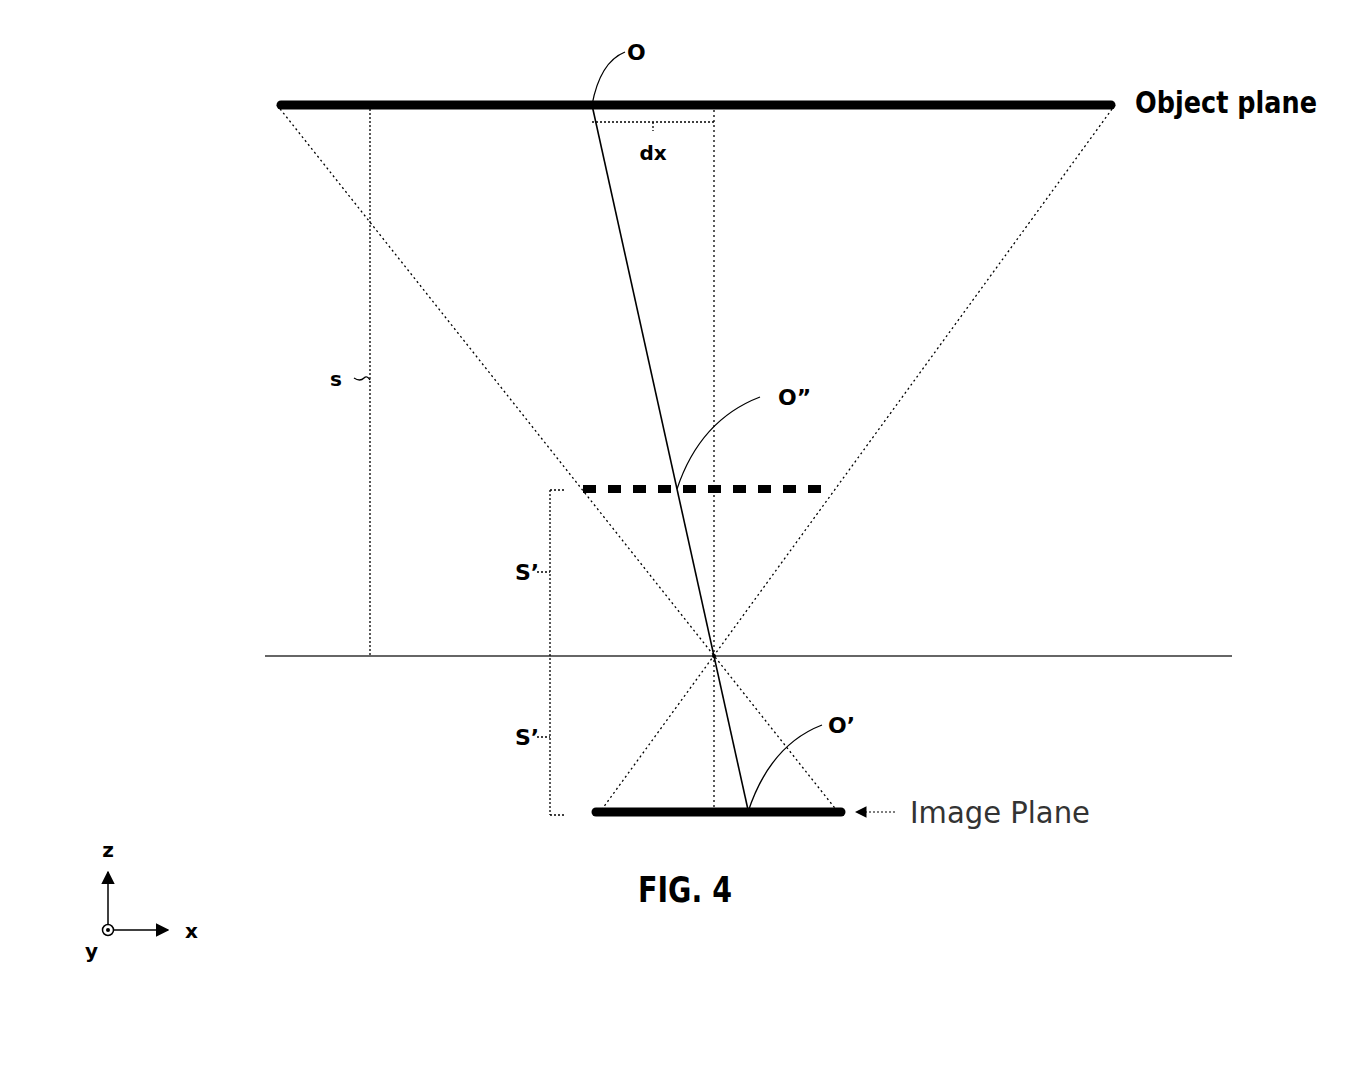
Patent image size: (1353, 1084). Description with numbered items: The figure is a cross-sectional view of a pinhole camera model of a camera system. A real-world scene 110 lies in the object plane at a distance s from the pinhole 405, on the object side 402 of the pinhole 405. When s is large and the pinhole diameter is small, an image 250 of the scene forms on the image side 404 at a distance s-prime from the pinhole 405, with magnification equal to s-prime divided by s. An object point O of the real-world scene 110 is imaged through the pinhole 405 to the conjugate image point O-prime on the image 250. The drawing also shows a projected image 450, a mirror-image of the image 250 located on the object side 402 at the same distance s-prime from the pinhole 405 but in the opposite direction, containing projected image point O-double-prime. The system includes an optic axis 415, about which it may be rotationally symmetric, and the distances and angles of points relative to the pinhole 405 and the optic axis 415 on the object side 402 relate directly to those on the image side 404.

The real-world scene 110 is at (325, 108).
The optic axis 415 is at (714, 288).
The projected image 450 is at (583, 489).
The pinhole 405 is at (714, 656).
The image 250 is at (596, 812).
The object side 402 is at (1105, 631).
The image side 404 is at (1098, 742).